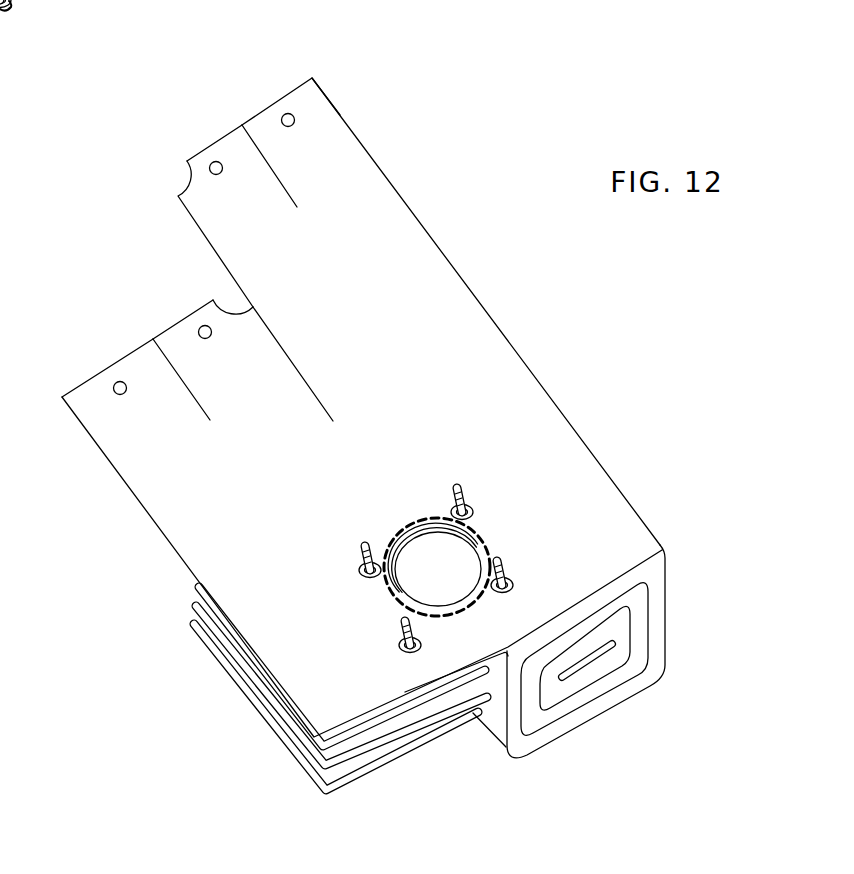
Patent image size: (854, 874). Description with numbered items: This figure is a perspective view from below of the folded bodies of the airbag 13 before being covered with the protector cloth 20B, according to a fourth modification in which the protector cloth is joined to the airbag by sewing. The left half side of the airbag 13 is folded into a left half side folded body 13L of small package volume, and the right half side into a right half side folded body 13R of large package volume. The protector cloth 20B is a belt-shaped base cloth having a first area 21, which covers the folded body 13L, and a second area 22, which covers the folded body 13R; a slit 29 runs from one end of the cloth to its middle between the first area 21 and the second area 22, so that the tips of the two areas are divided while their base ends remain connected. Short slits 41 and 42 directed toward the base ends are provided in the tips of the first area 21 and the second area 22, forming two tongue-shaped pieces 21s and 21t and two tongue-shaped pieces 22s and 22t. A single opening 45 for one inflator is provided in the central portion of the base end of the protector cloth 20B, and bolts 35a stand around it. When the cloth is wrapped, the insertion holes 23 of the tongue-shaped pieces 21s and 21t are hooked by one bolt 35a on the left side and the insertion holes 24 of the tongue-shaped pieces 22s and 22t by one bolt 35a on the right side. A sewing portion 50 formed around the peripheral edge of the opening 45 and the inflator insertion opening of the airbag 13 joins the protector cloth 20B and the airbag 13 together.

The airbag 13 is at (472, 693).
The left half side folded body 13L is at (282, 752).
The right half side folded body 13R is at (667, 633).
The protector cloth 20B is at (331, 368).
The first area 21 is at (154, 430).
The tongue-shaped piece 21s is at (87, 395).
The tongue-shaped piece 21t is at (175, 340).
The second area 22 is at (314, 168).
The tongue-shaped piece 22s is at (307, 100).
The tongue-shaped piece 22t is at (225, 150).
The insertion hole 23 is at (211, 337).
The insertion hole 24 is at (294, 124).
The slit 29 is at (306, 378).
The bolt 35a is at (460, 486).
The slit 41 is at (198, 405).
The slit 42 is at (288, 192).
The opening 45 is at (453, 597).
The sewing portion 50 is at (390, 587).